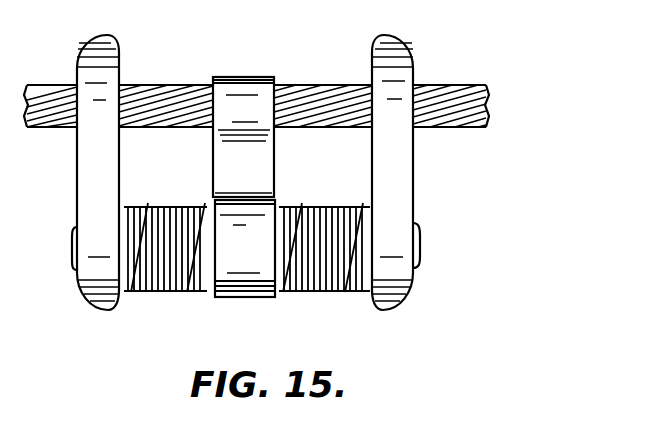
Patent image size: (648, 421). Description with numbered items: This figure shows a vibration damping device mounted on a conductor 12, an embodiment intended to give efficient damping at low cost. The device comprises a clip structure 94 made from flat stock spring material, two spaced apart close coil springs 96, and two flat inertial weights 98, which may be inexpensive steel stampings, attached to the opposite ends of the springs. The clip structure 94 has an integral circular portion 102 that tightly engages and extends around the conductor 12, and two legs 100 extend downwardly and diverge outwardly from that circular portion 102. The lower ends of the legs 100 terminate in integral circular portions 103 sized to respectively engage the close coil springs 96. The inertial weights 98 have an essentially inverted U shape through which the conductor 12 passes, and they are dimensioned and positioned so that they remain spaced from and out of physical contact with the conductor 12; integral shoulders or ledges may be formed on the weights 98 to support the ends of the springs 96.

The conductor 12 is at (155, 84).
The clip structure 94 is at (208, 165).
The close coil springs 96 is at (166, 292).
The flat inertial weights 98 is at (93, 175).
The legs 100 is at (258, 180).
The integral circular portion 102 is at (247, 77).
The integral circular portions 103 is at (249, 297).